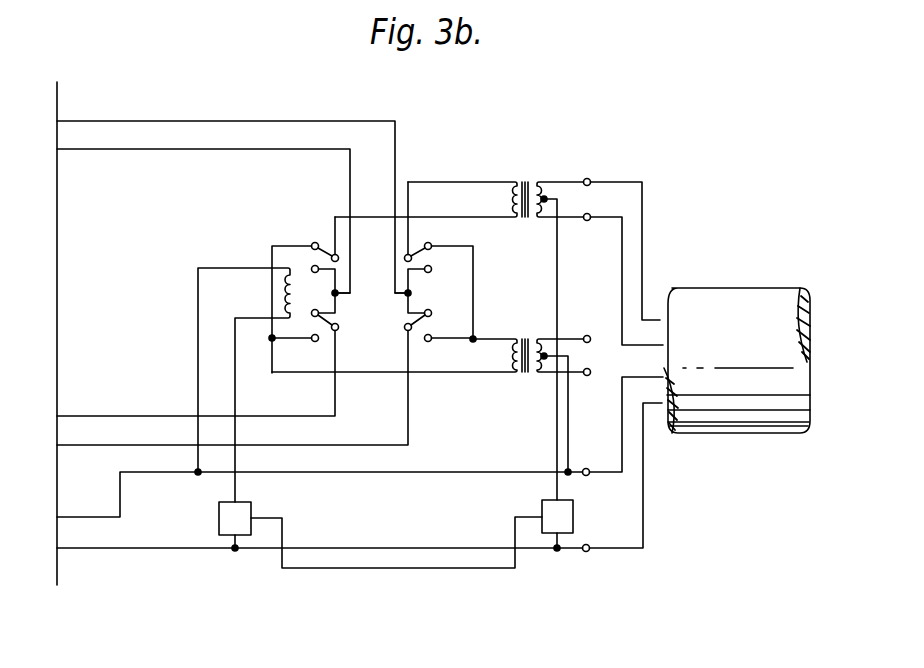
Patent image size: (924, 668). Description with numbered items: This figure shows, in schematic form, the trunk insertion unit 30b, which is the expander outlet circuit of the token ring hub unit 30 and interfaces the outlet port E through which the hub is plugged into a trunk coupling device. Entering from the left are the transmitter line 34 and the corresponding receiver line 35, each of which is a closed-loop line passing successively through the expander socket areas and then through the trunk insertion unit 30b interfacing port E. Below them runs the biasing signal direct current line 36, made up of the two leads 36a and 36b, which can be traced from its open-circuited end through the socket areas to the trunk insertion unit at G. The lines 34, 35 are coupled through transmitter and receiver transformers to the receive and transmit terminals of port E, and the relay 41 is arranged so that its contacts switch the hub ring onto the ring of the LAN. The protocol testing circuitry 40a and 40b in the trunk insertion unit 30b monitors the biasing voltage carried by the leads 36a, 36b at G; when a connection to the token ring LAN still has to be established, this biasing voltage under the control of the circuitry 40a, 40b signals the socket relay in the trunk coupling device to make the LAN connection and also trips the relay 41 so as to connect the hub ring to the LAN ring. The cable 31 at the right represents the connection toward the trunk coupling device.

The token ring hub unit 30 is at (305, 72).
The trunk insertion unit 30b is at (147, 108).
The cable 31 is at (722, 428).
The transmitter line 34 is at (180, 120).
The receiver line 35 is at (178, 152).
The biasing signal direct current line 36 is at (95, 557).
The lead 36a is at (142, 473).
The lead 36b is at (137, 550).
The protocol testing circuitry 40a is at (240, 515).
The protocol testing circuitry 40b is at (552, 513).
The relay 41 is at (291, 266).